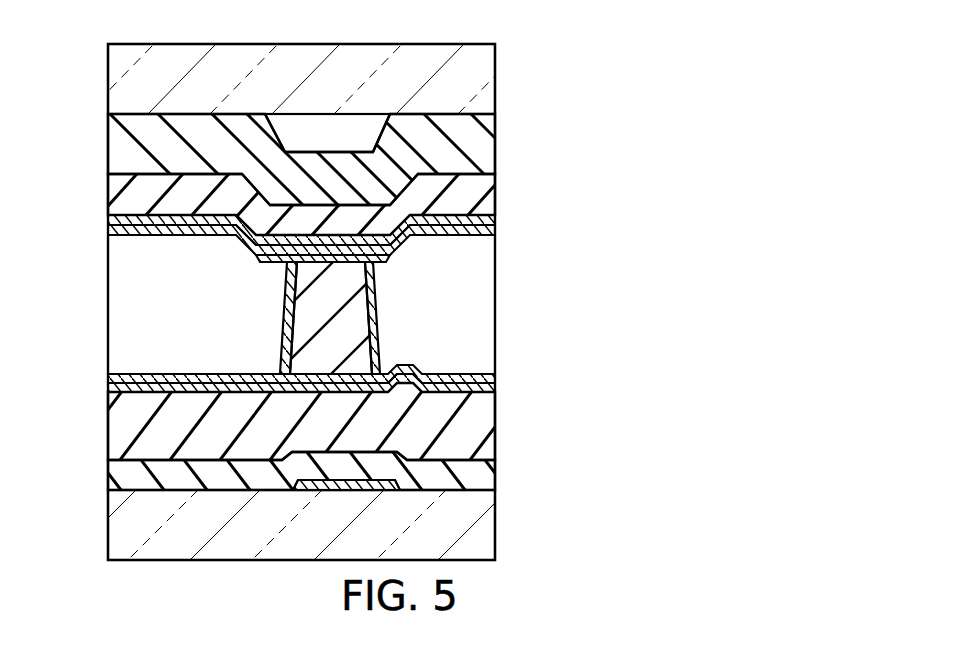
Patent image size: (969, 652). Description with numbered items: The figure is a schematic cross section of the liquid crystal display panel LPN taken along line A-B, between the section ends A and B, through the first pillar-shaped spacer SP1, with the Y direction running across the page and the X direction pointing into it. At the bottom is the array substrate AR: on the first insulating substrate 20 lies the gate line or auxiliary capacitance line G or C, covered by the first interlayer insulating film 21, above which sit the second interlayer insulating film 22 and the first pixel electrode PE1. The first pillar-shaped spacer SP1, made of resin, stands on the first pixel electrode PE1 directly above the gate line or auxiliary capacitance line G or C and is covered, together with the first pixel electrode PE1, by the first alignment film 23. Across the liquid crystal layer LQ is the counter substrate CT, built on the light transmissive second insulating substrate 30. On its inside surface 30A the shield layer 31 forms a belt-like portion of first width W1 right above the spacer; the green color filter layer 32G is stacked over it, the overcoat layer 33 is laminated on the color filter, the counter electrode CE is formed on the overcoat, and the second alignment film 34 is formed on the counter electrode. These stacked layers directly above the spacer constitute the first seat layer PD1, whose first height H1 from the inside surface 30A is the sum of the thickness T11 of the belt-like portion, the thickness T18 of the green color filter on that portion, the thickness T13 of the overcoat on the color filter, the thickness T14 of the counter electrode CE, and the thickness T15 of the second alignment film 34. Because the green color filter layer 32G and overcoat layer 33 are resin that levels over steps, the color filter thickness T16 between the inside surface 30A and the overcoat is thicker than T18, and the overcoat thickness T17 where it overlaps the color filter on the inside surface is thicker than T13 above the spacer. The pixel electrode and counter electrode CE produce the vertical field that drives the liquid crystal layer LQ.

The second insulating substrate 30 is at (108, 80).
The shield layer 31 is at (388, 130).
The liquid crystal display panel LPN is at (458, 40).
The counter substrate CT is at (500, 70).
The green color filter layer 32G is at (108, 134).
The inside surface 30A is at (470, 126).
The overcoat layer 33 is at (108, 192).
The counter electrode CE is at (108, 218).
The second alignment film 34 is at (108, 236).
The liquid crystal layer LQ is at (108, 308).
The first seat layer PD1 is at (242, 248).
The first pillar-shaped spacer SP1 is at (287, 346).
The first alignment film 23 is at (108, 376).
The first pixel electrode PE1 is at (108, 388).
The second interlayer insulating film 22 is at (108, 438).
The first interlayer insulating film 21 is at (108, 476).
The array substrate AR is at (500, 467).
The first insulating substrate 20 is at (108, 522).
The gate line or auxiliary capacitance line G or C is at (392, 491).
The first width W1 is at (395, 110).
The first height H1 is at (402, 257).
The film thickness of green color filter layer T16 is at (152, 116).
The film thickness of first belt-like portion T11 is at (321, 116).
The film thickness of overcoat layer T17 is at (190, 176).
The film thickness of green color filter layer on belt-like portion T18 is at (328, 155).
The film thickness of overcoat layer on green color filter layer T13 is at (316, 207).
The film thickness of counter electrode T14 is at (367, 208).
The thickness of second alignment film T15 is at (377, 300).
The section line end A is at (87, 557).
The section line end B is at (518, 557).
The X direction X is at (709, 539).
The Y direction Y is at (641, 543).